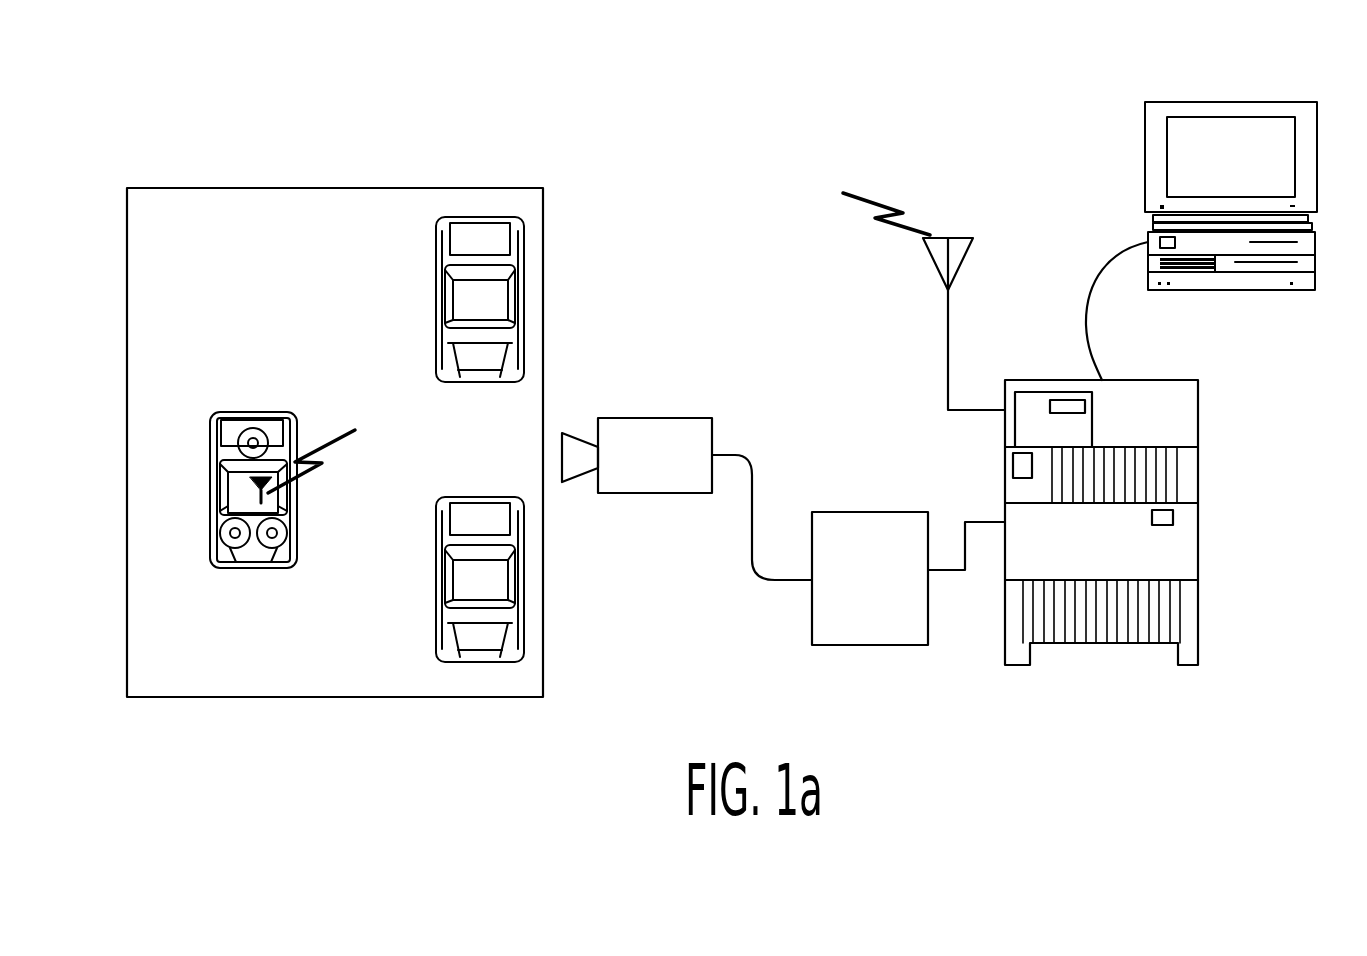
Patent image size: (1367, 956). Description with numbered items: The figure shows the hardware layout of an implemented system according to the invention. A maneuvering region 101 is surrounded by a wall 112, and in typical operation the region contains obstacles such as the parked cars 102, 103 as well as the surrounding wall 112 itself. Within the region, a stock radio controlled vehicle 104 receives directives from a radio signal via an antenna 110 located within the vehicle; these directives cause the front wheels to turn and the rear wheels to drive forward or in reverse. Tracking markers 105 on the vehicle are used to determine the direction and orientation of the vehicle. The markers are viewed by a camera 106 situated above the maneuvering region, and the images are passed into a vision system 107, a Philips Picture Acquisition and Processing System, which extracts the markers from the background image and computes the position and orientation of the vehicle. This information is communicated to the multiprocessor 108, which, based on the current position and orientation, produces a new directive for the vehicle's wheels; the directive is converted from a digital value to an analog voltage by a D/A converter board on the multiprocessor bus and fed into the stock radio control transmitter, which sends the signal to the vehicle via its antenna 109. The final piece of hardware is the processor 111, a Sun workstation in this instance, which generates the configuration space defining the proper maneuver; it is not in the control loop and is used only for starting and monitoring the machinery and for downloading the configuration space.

The maneuvering region 101 is at (255, 198).
The parked car 102 is at (475, 578).
The parked car 103 is at (487, 298).
The stock radio controlled vehicle 104 is at (270, 462).
The tracking markers 105 is at (253, 443).
The camera 106 is at (668, 418).
The vision system 107 is at (820, 622).
The multiprocessor 108 is at (1183, 525).
The antenna 109 is at (925, 260).
The antenna 110 is at (268, 494).
The processor 111 is at (1317, 157).
The wall 112 is at (335, 389).